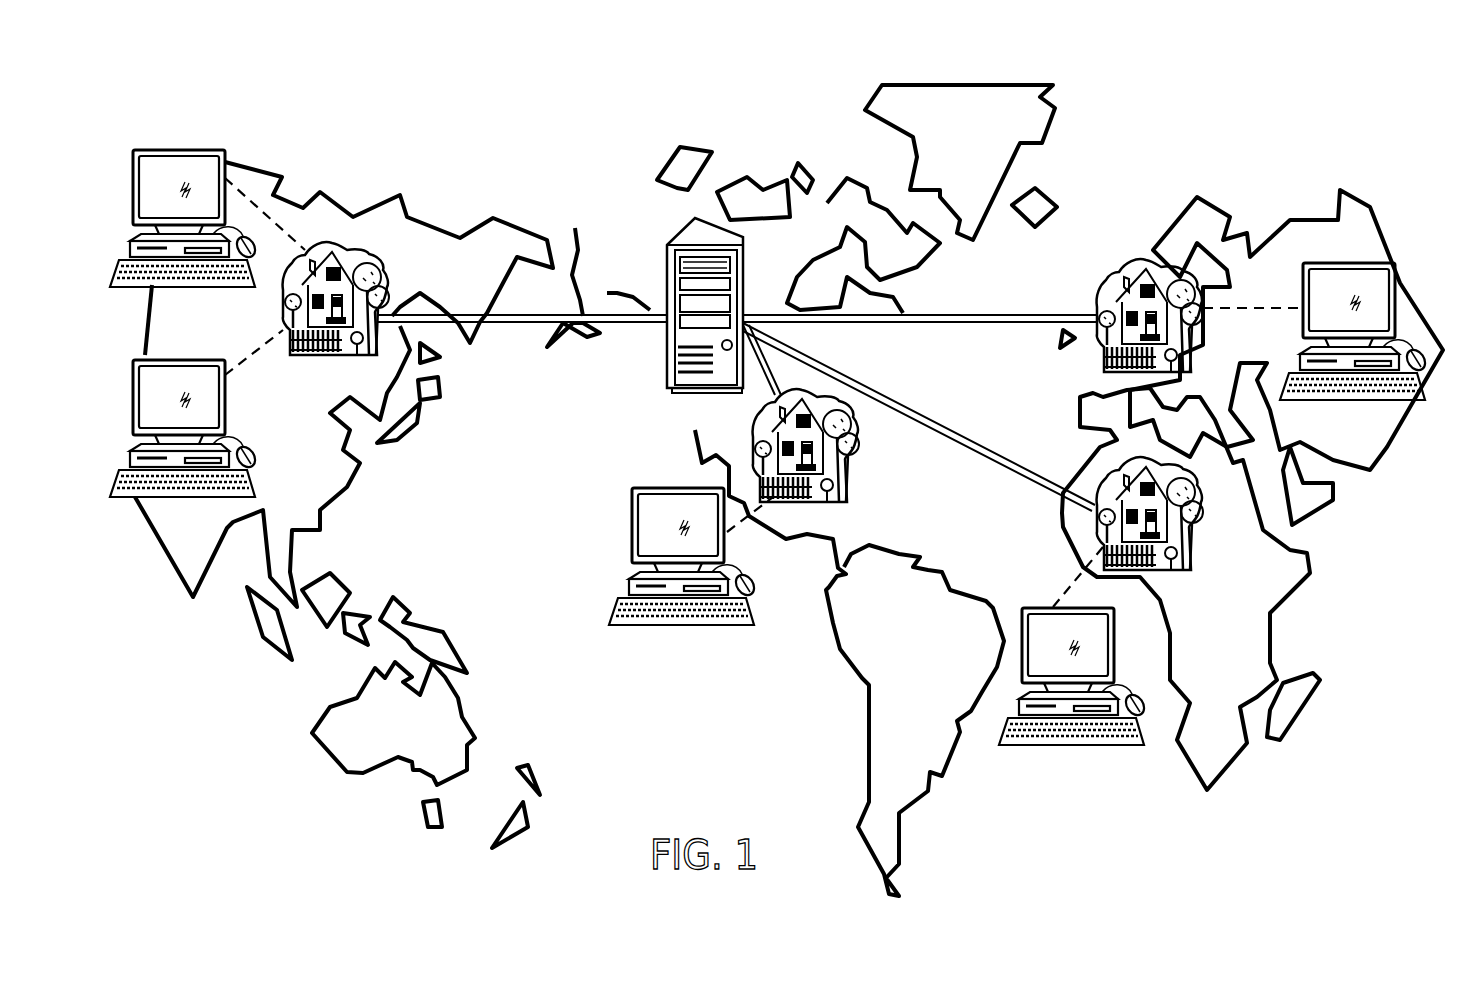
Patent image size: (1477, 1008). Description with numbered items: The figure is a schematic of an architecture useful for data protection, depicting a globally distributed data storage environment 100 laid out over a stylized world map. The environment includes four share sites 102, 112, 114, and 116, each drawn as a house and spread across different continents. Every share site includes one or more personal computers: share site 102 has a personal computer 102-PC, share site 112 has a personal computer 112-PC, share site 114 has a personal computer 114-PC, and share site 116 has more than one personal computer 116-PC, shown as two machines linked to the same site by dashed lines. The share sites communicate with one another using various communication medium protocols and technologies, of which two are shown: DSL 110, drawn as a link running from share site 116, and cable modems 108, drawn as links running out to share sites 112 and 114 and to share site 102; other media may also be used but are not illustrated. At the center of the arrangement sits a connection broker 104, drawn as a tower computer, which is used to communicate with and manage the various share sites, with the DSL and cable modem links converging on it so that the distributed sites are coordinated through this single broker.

The globally distributed data storage environment 100 is at (818, 64).
The share site 102 is at (755, 418).
The personal computer 102-PC is at (632, 522).
The connection broker 104 is at (667, 370).
The cable modems 108 is at (1020, 284).
The DSL 110 is at (509, 347).
The share site 112 is at (1200, 342).
The personal computer 112-PC is at (1378, 263).
The share site 114 is at (1200, 532).
The personal computer 114-PC is at (1062, 746).
The share site 116 is at (372, 262).
The personal computers 116-PC is at (172, 151).